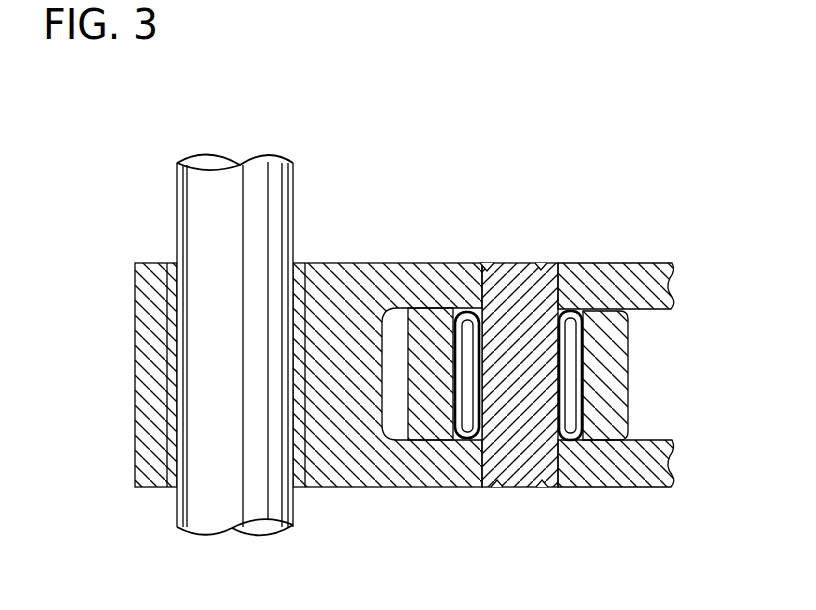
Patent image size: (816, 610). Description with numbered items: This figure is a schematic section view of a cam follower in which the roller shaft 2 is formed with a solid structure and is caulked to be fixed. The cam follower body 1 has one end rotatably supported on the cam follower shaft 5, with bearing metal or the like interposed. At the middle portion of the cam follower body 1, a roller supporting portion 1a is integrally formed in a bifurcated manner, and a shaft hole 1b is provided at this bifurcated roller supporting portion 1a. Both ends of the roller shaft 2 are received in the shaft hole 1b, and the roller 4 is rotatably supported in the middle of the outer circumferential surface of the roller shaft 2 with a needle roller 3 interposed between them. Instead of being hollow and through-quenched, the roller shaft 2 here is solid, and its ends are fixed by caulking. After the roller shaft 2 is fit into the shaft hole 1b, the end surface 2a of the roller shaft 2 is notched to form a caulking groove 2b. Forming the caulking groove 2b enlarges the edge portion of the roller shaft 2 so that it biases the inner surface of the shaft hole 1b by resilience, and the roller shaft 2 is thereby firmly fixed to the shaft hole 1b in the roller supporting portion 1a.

The cam follower body 1 is at (341, 470).
The roller supporting portion 1a is at (422, 270).
The shaft hole 1b is at (466, 270).
The roller shaft 2 is at (520, 270).
The end surface 2a is at (517, 487).
The caulking groove 2b is at (542, 487).
The needle roller 3 is at (568, 313).
The roller 4 is at (607, 340).
The cam follower shaft 5 is at (257, 168).